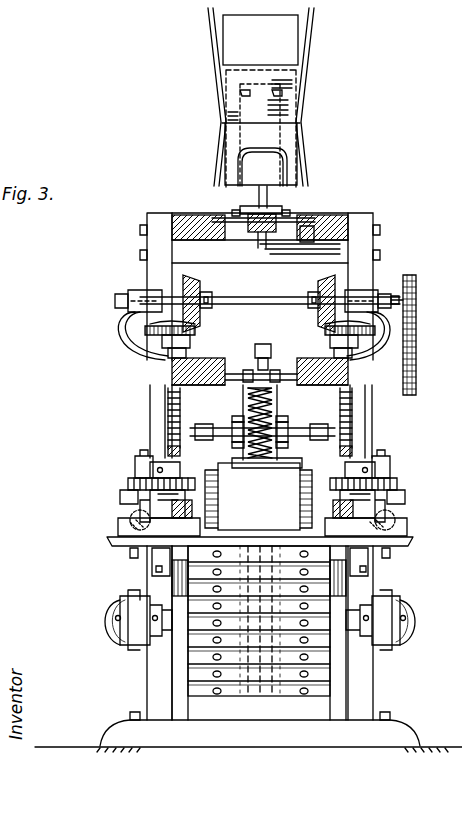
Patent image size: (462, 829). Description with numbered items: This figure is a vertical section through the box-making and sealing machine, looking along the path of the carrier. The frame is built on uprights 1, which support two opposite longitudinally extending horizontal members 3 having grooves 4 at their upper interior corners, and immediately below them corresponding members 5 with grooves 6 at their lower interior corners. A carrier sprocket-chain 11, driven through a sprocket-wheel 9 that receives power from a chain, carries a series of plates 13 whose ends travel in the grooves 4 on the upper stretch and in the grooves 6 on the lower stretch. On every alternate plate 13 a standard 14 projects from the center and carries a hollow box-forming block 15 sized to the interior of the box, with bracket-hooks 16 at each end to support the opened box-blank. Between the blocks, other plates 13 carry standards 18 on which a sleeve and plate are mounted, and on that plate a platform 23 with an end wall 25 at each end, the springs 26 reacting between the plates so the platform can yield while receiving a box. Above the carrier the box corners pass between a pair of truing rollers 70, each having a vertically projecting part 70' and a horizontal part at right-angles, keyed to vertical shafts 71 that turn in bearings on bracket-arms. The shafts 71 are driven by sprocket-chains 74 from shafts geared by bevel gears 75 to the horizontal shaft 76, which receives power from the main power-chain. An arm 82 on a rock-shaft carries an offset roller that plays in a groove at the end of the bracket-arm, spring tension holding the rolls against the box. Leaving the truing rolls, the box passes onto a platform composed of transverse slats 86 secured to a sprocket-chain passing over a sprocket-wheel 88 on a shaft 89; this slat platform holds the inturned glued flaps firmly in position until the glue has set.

The uprights 1 is at (150, 428).
The longitudinally extending horizontal members 3 is at (176, 212).
The grooves 4 is at (206, 244).
The members 5 is at (168, 368).
The grooves 6 is at (226, 378).
The sprocket-wheel 9 is at (316, 222).
The sprocket-chain 11 is at (270, 242).
The plates 13 is at (232, 218).
The standard 14 is at (270, 196).
The box-forming blocks 15 is at (272, 80).
The bracket-hooks 16 is at (286, 150).
The standards 18 is at (272, 410).
The platform 23 is at (216, 460).
The end wall 25 is at (258, 518).
The springs 26 is at (250, 412).
The truing rollers 70 is at (256, 537).
The vertically projecting part 70' is at (259, 516).
The vertical shafts 71 is at (150, 572).
The sprocket-chains 74 is at (128, 484).
The bevel gears 75 is at (200, 325).
The shaft 76 is at (258, 306).
The arm 82 is at (140, 498).
The transverse slats 86 is at (330, 662).
The sprocket-wheel 88 is at (244, 708).
The shaft 89 is at (172, 622).